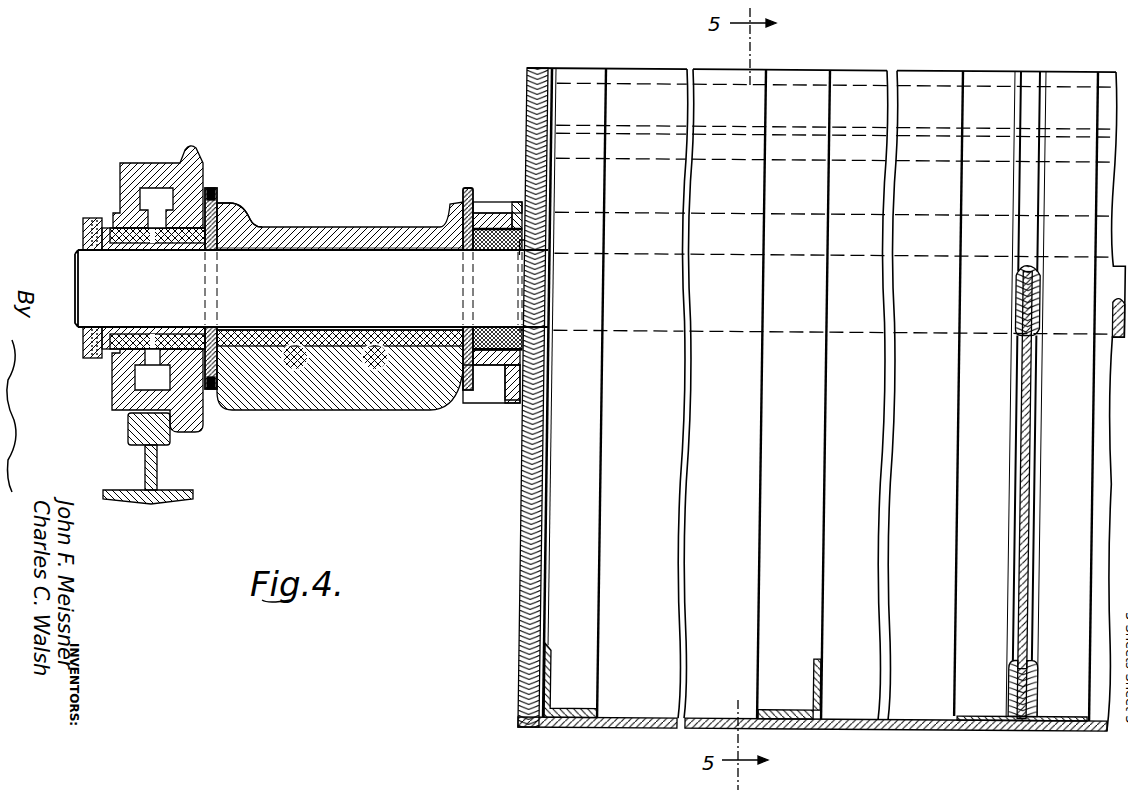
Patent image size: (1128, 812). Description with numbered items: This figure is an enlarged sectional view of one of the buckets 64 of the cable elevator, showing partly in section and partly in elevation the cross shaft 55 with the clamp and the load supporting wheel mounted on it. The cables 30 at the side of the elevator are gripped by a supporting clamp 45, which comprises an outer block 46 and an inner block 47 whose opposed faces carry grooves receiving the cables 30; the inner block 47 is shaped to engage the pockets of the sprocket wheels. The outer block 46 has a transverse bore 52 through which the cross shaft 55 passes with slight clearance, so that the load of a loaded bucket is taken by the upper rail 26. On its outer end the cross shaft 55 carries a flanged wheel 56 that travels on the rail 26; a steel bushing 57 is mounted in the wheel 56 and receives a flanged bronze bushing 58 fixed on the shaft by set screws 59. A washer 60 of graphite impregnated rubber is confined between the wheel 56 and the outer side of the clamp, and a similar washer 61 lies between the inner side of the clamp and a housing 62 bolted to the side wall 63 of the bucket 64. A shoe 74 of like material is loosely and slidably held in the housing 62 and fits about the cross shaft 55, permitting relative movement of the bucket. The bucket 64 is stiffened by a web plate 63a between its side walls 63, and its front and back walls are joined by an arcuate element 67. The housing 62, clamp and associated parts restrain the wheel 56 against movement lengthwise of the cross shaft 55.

The upper rail 26 is at (160, 470).
The cable 30 is at (292, 362).
The supporting clamp 45 is at (326, 228).
The outer block 46 is at (272, 227).
The inner block 47 is at (326, 400).
The transverse bore 52 is at (300, 258).
The cross shaft 55 is at (385, 258).
The flanged wheel 56 is at (138, 165).
The steel bushing 57 is at (125, 236).
The flanged bronze bushing 58 is at (83, 229).
The set screw 59 is at (96, 358).
The washer 60 is at (214, 190).
The washer 61 is at (464, 200).
The housing 62 is at (502, 398).
The side wall 63 is at (526, 496).
The stiffening web plate 63a is at (1022, 474).
The bucket 64 is at (512, 544).
The arcuate element 67 is at (612, 727).
The shoe 74 is at (491, 227).